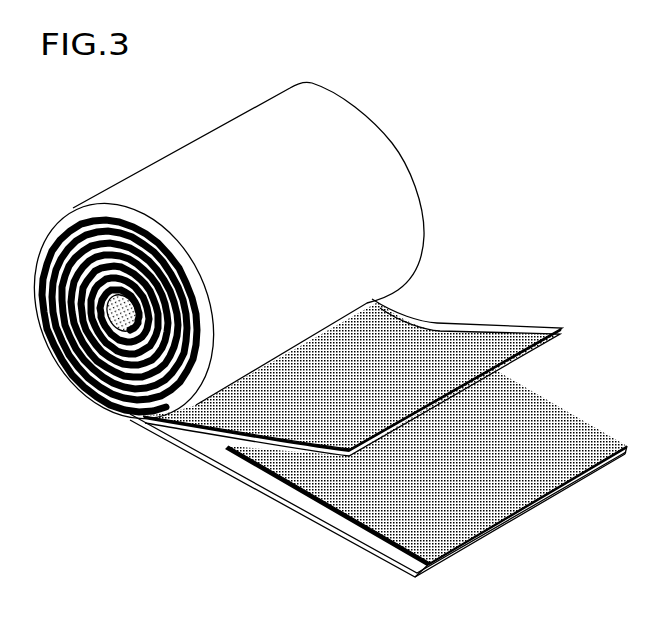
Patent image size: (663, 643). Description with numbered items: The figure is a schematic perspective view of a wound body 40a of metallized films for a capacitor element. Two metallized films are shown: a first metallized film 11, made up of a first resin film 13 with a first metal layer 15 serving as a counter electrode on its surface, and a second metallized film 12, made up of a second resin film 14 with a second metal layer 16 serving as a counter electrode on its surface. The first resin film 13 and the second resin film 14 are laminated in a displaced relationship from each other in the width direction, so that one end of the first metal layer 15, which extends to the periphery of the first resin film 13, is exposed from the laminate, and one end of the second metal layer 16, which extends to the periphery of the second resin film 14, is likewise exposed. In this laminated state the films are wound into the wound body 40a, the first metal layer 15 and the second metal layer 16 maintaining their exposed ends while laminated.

The wound body 40a is at (473, 132).
The first metallized film 11 is at (354, 324).
The first resin film 13 is at (437, 323).
The first metal layer 15 is at (498, 342).
The second metallized film 12 is at (378, 490).
The second resin film 14 is at (275, 483).
The second metal layer 16 is at (357, 497).